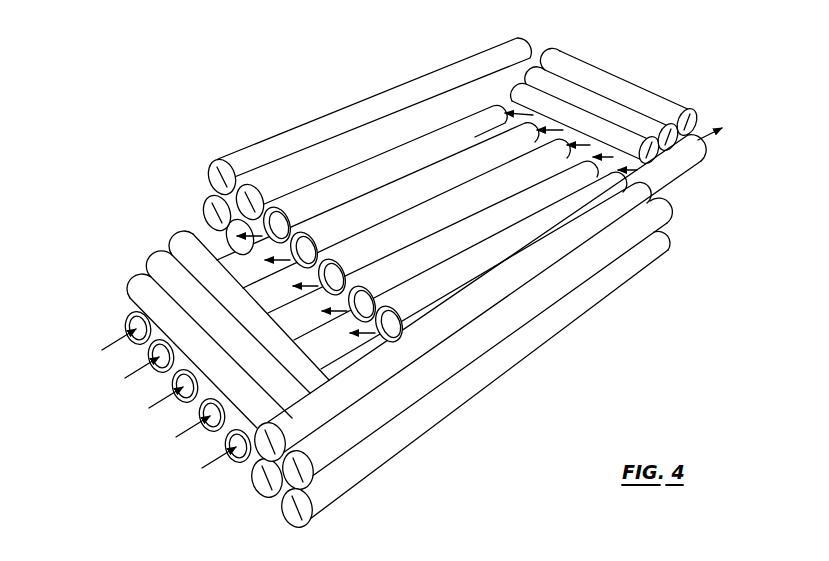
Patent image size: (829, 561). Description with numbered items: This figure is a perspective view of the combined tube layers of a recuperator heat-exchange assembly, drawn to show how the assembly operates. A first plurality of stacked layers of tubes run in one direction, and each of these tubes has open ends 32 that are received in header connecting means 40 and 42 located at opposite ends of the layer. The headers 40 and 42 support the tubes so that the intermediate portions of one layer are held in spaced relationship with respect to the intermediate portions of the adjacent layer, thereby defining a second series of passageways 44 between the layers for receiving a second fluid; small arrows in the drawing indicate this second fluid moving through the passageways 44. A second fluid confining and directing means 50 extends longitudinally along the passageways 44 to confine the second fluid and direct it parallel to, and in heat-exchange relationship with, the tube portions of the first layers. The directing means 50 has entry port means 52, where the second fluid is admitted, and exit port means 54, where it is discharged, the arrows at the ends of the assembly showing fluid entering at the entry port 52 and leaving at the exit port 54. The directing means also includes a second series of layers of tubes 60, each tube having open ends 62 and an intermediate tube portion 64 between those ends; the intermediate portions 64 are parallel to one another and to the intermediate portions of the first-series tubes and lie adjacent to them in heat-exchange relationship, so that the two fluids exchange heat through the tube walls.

The open ends 32 is at (126, 325).
The header connecting means 40 is at (132, 277).
The header connecting means 42 is at (632, 93).
The second series of passageways 44 is at (505, 100).
The second fluid confining and directing means 50 is at (345, 114).
The entry port means 52 is at (650, 178).
The exit port means 54 is at (217, 247).
The second series of layers of tubes 60 is at (357, 195).
The open ends 62 is at (290, 216).
The intermediate tube portions 64 is at (418, 229).